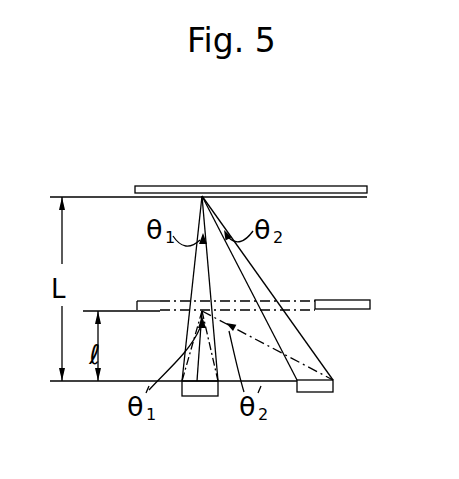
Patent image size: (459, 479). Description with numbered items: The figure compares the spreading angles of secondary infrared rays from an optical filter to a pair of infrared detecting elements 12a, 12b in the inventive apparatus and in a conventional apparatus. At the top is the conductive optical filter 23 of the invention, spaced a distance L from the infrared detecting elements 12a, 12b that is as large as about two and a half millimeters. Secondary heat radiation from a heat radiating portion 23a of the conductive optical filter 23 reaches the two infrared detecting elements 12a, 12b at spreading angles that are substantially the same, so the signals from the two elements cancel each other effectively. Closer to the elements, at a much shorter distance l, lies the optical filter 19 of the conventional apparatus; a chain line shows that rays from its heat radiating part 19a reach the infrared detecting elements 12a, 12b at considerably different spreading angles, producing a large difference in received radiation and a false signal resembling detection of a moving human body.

The conductive optical filter 23 is at (307, 186).
The heat radiating portion 23a is at (203, 193).
The optical filter 19 is at (258, 281).
The heat radiating part 19a is at (201, 309).
The infrared detecting element 12a is at (202, 396).
The infrared detecting element 12b is at (317, 392).